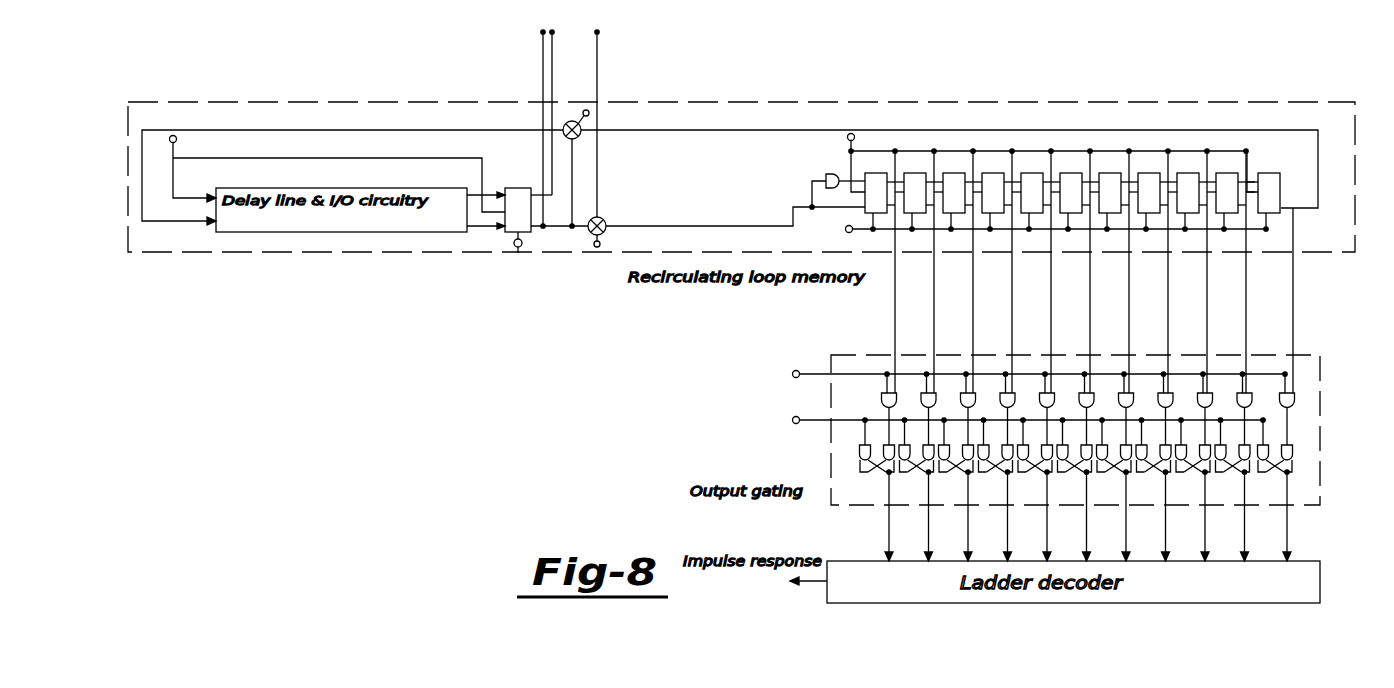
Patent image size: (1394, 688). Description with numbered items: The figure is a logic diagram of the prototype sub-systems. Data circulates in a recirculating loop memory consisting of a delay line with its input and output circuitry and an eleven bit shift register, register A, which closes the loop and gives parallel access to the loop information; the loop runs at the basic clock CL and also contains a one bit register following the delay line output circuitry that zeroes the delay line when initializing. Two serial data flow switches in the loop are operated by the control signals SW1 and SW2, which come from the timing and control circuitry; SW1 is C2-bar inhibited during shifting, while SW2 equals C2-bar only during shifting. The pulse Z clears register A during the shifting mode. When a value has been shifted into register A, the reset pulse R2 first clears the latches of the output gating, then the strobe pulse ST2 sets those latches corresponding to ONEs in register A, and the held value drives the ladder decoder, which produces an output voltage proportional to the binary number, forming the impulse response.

The clock CL is at (338, 172).
The serial data flow switch control signal SW1 is at (614, 234).
The serial data flow switch control signal SW2 is at (596, 168).
The register A is at (1071, 263).
The pulse Z is at (1048, 230).
The strobe pulse ST2 is at (1022, 374).
The reset pulse R2 is at (1018, 419).